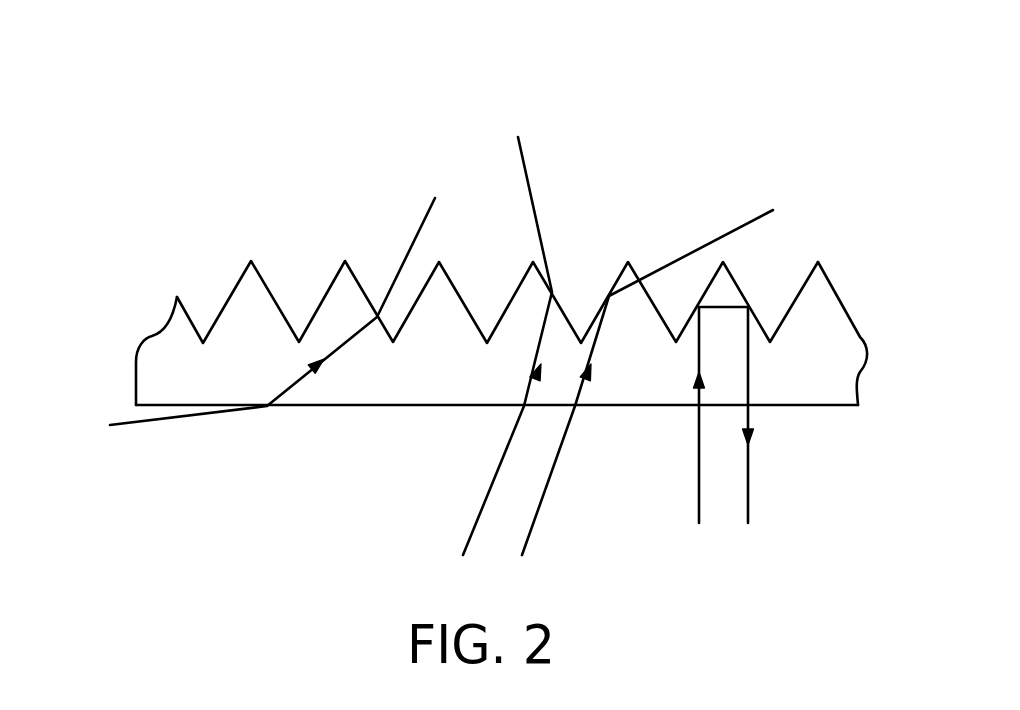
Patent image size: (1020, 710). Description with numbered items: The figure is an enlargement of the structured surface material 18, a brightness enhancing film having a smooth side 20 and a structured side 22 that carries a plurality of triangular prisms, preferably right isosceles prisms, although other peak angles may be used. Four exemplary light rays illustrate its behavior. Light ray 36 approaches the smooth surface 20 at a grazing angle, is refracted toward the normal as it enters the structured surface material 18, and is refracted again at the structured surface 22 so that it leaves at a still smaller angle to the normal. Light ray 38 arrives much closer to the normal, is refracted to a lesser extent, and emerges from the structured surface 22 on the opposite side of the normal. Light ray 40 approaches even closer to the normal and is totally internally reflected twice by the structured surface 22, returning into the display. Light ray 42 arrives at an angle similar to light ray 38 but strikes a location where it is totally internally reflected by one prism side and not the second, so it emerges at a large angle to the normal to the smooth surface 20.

The structured surface material 18 is at (842, 372).
The smooth side 20 is at (335, 408).
The structured side 22 is at (323, 293).
The light ray 36 is at (168, 420).
The light ray 38 is at (497, 477).
The light ray 40 is at (695, 463).
The light ray 42 is at (552, 482).